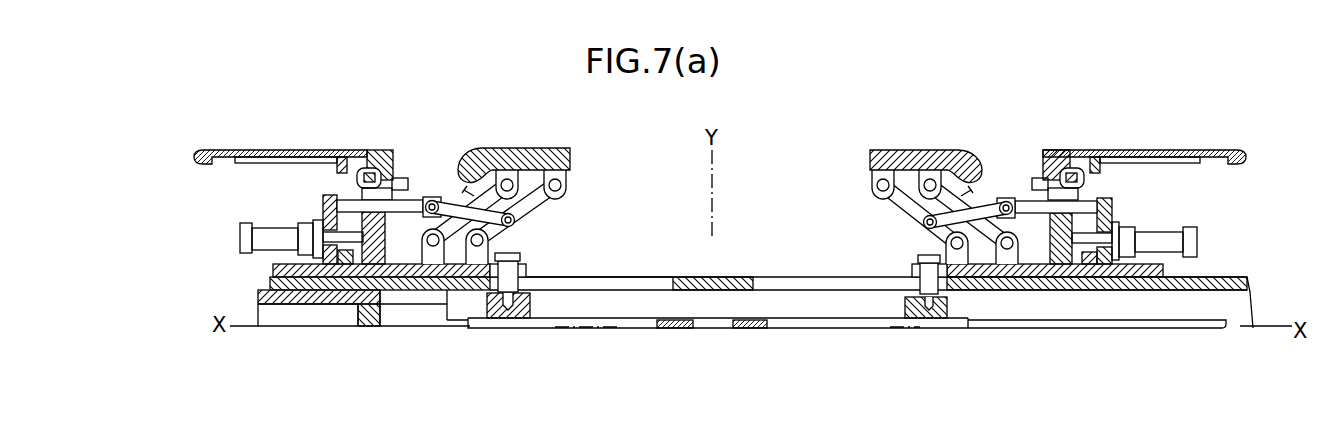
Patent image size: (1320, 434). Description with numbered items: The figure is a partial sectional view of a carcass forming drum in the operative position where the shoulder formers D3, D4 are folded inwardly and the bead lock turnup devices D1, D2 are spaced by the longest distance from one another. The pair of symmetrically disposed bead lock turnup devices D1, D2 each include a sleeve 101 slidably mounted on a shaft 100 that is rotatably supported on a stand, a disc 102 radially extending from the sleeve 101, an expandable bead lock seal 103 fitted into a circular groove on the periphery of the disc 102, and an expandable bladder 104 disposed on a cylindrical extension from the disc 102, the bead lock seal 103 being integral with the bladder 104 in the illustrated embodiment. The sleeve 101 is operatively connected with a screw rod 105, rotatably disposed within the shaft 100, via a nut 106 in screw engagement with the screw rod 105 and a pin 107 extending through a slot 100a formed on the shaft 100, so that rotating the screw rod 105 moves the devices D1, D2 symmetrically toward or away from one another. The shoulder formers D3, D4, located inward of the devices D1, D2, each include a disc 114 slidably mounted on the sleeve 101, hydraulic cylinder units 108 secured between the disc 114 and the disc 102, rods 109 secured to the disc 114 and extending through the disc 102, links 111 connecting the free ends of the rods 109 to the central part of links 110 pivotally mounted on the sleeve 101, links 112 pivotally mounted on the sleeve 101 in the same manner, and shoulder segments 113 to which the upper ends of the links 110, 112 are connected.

The shaft 100 is at (705, 277).
The slot 100a is at (585, 276).
The sleeve 101 is at (522, 254).
The disc 102 is at (376, 246).
The bead lock seal 103 is at (380, 150).
The bladder 104 is at (268, 150).
The screw rod 105 is at (597, 317).
The nut 106 is at (533, 302).
The pin 107 is at (512, 261).
The hydraulic cylinder unit 108 is at (247, 222).
The rod 109 is at (417, 200).
The link 110 is at (551, 199).
The link 111 is at (446, 198).
The link 112 is at (442, 289).
The shoulder segment 113 is at (566, 148).
The disc 114 is at (323, 203).
The bead lock turnup device D1 is at (331, 126).
The bead lock turnup device D2 is at (1097, 138).
The shoulder former D3 is at (529, 128).
The shoulder former D4 is at (931, 136).